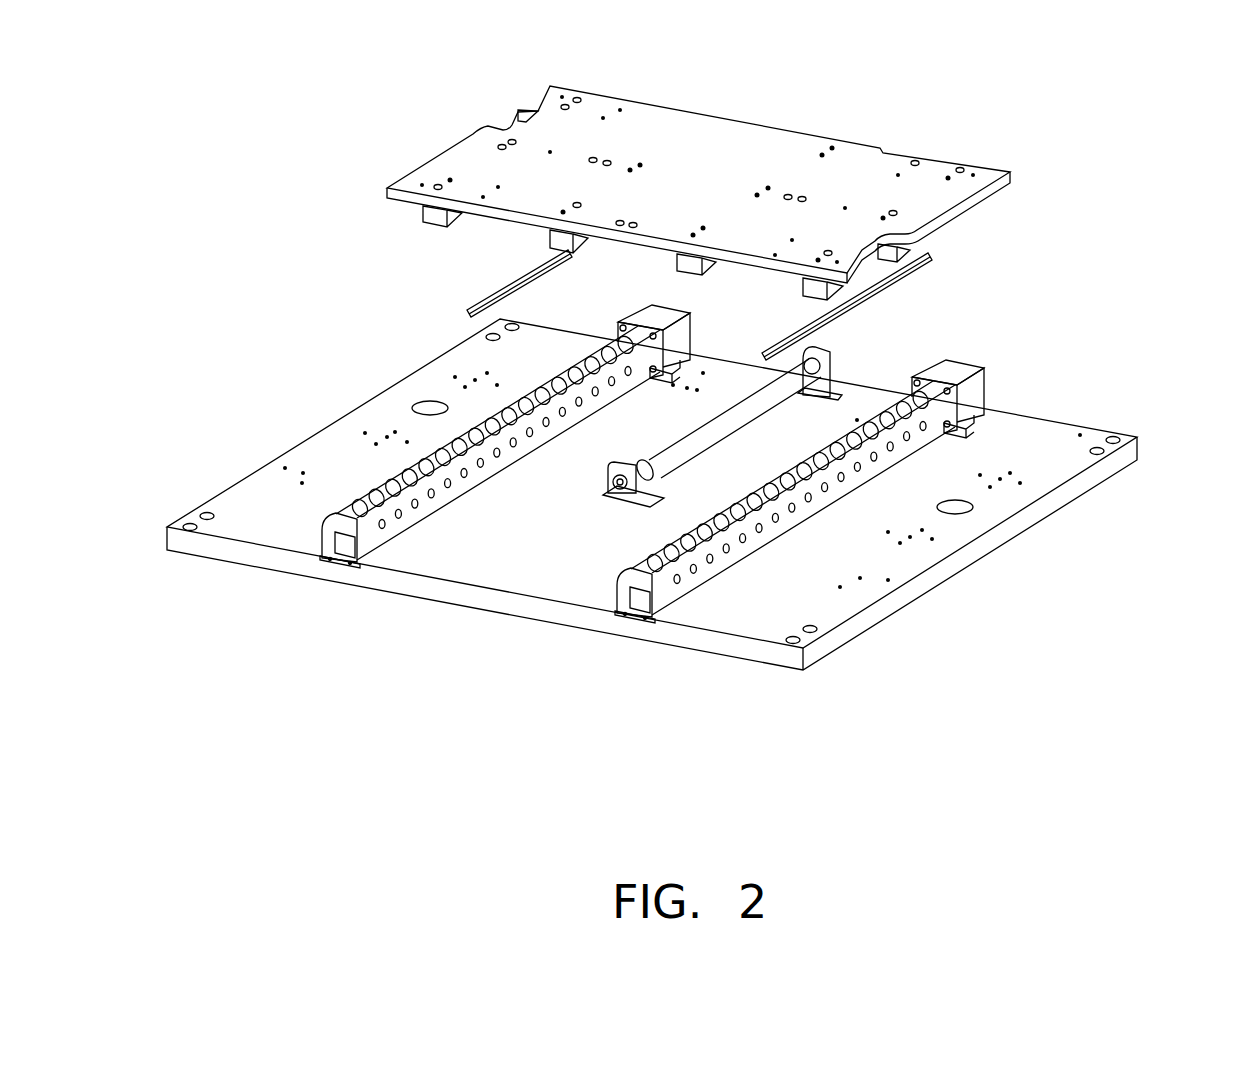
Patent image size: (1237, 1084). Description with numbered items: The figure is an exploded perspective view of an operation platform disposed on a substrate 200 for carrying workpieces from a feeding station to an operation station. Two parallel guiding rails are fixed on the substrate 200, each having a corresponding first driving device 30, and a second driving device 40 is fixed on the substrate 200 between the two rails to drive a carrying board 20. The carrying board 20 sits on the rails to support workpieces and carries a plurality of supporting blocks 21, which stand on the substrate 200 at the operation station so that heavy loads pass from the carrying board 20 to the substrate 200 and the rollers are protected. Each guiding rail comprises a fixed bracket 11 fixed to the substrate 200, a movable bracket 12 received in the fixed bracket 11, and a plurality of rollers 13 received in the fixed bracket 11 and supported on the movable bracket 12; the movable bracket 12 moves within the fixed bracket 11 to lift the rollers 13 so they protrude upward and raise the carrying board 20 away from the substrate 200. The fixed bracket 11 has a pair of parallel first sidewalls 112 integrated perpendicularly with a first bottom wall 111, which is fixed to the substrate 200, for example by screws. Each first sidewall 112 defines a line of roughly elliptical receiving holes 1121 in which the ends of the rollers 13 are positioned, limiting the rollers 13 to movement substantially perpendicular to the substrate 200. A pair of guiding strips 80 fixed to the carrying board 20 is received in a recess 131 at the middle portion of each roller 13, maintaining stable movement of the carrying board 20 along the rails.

The substrate 200 is at (1098, 475).
The carrying board 20 is at (495, 178).
The supporting blocks 21 is at (428, 218).
The guiding strips 80 is at (468, 310).
The first driving devices 30 is at (685, 337).
The second driving device 40 is at (807, 367).
The fixed bracket 11 is at (548, 529).
The rollers 13 is at (498, 443).
The recess 131 is at (492, 427).
The receiving holes 1121 is at (505, 448).
The movable bracket 12 is at (339, 521).
The first bottom wall 111 is at (339, 540).
The first sidewalls 112 is at (340, 562).